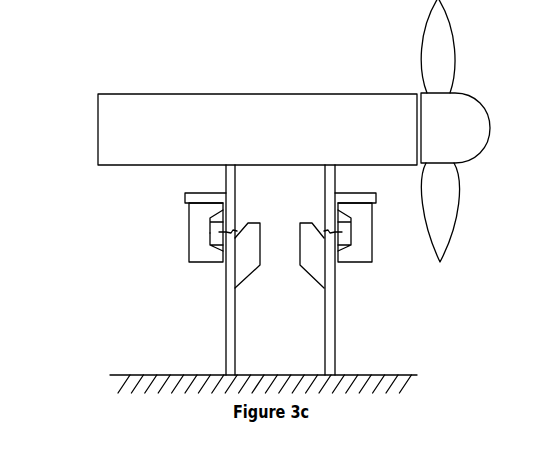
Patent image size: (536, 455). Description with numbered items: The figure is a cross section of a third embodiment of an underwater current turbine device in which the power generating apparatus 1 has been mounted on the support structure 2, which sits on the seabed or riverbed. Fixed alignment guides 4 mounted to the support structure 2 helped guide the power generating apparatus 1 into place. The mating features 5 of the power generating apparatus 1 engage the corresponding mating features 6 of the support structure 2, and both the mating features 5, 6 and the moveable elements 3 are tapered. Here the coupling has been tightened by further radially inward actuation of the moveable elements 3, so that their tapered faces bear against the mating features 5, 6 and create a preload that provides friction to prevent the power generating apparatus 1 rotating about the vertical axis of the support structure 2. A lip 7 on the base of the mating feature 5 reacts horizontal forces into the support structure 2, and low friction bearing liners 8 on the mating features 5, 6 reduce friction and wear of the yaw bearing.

The power generating apparatus 1 is at (112, 138).
The support structure 2 is at (225, 343).
The moveable elements 3 is at (197, 237).
The fixed alignment guides 4 is at (317, 263).
The mating features 5 is at (212, 222).
The mating features 6 is at (212, 245).
The lip 7 is at (231, 236).
The low friction bearing liners 8 is at (351, 243).